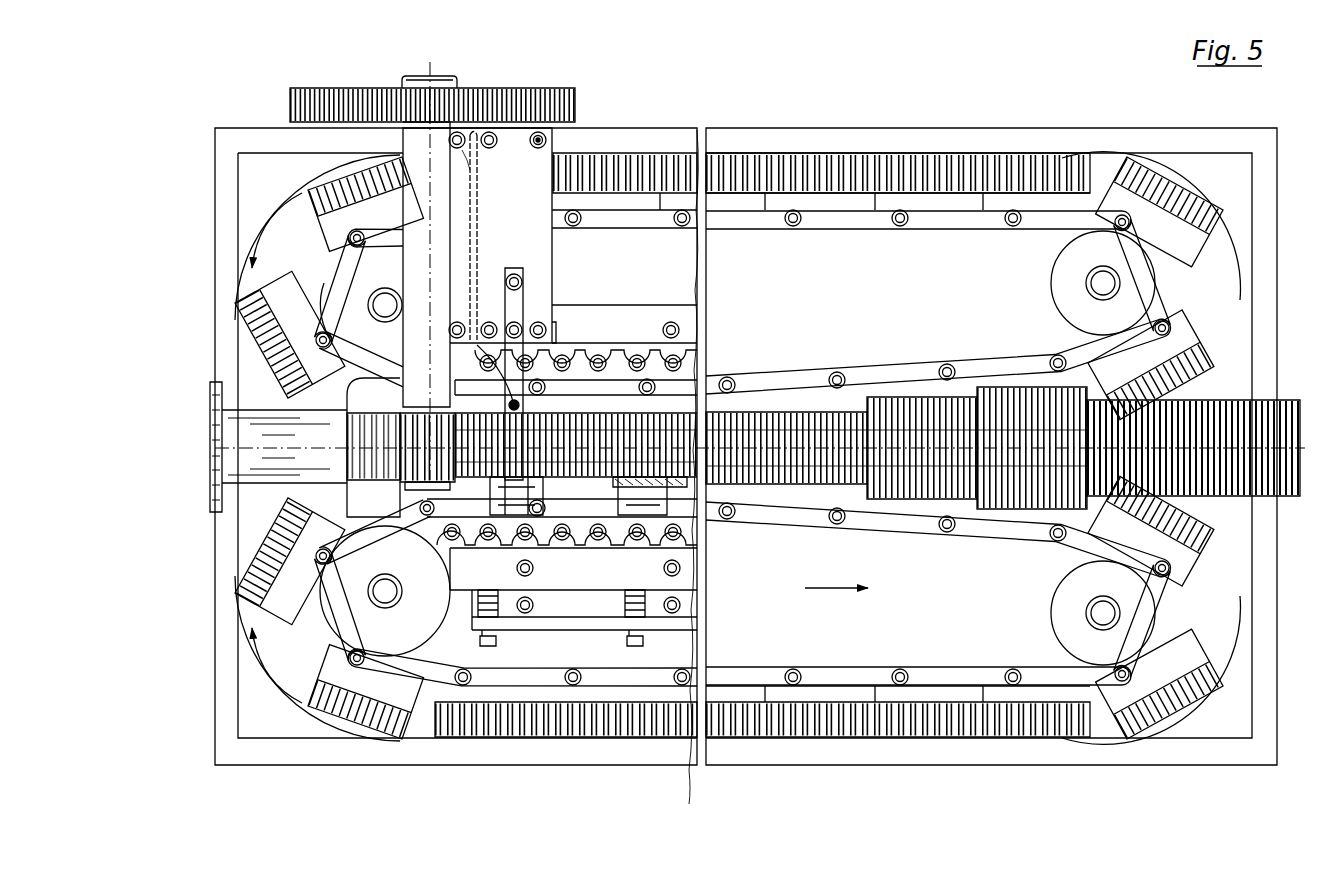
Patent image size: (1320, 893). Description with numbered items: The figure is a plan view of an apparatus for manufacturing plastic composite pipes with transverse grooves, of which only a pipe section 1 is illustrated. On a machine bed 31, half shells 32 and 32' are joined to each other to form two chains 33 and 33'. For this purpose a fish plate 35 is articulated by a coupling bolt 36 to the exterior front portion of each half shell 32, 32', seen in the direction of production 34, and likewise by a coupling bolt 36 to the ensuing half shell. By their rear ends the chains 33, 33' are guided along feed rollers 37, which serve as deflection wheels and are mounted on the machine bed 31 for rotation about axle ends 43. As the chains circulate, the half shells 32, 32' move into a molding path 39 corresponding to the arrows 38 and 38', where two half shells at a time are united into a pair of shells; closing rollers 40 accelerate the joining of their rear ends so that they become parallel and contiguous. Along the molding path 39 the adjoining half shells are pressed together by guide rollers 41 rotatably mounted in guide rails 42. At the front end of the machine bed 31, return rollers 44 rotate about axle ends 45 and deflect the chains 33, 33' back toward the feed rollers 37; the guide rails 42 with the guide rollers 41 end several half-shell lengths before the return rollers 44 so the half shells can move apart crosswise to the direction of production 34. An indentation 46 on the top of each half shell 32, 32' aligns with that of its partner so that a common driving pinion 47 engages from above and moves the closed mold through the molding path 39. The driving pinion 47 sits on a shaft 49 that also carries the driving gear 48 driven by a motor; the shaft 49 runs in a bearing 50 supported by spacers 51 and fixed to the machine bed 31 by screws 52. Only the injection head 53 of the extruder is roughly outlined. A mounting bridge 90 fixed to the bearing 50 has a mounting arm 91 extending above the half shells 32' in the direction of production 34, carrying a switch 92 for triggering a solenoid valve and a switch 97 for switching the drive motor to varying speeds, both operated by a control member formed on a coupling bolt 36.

The pipe section 1 is at (1247, 396).
The machine bed 31 is at (258, 172).
The half shell 32 is at (247, 317).
The half shell 32' is at (248, 568).
The chain 33 is at (287, 172).
The chain 33' is at (346, 733).
The direction of production 34 is at (839, 592).
The fish plate 35 is at (838, 213).
The coupling bolt 36 is at (900, 212).
The feed roller 37 is at (410, 613).
The arrow 38 is at (226, 228).
The arrow 38' is at (227, 662).
The molding path 39 is at (743, 410).
The closing roller 40 is at (322, 345).
The guide roller 41 is at (512, 490).
The guide rail 42 is at (473, 556).
The axle end 43 is at (384, 590).
The return roller 44 is at (1083, 637).
The axle end 45 is at (1103, 613).
The indentation 46 is at (280, 325).
The driving pinion 47 is at (428, 462).
The driving gear 48 is at (539, 133).
The shaft 49 is at (441, 130).
The bearing 50 is at (418, 153).
The spacer 51 is at (552, 145).
The screw 52 is at (476, 135).
The injection head 53 is at (247, 428).
The mounting bridge 90 is at (515, 312).
The mounting arm 91 is at (594, 485).
The switch 92 is at (527, 515).
The switch 97 is at (648, 492).